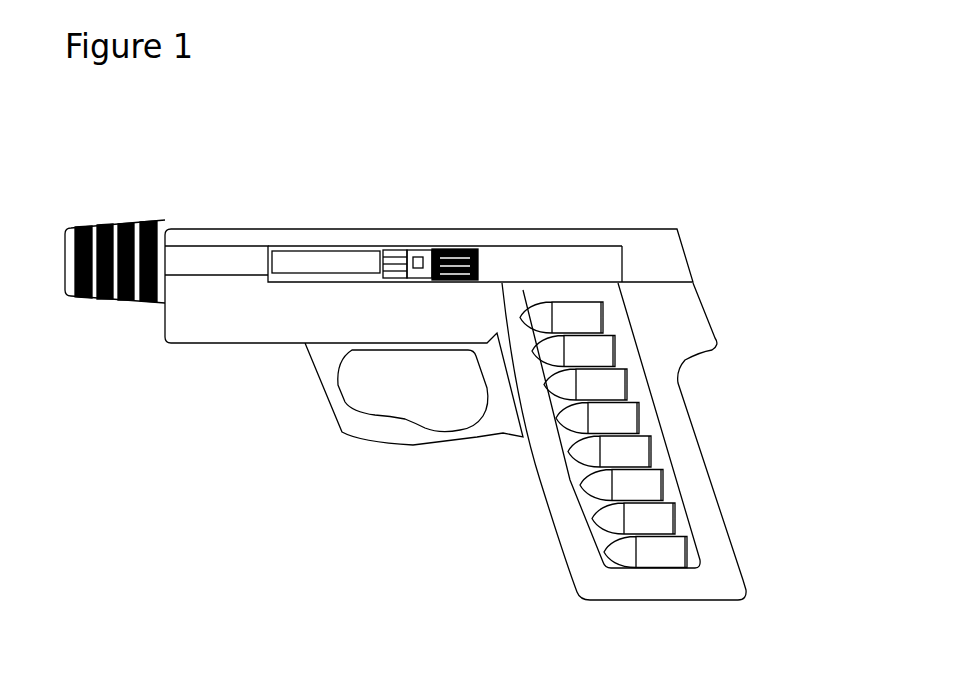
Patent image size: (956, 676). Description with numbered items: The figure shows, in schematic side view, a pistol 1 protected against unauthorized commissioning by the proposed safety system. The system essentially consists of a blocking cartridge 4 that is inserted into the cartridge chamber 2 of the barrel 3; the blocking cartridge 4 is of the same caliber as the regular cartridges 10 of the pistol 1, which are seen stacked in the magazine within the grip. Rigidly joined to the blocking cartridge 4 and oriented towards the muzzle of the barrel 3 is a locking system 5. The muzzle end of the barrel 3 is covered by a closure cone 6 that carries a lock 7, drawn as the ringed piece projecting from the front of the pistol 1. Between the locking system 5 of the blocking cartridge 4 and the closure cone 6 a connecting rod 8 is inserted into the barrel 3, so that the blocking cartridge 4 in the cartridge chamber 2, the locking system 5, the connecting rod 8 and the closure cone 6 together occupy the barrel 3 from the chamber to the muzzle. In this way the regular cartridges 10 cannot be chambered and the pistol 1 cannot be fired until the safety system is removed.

The pistol 1 is at (663, 313).
The cartridge chamber 2 is at (428, 258).
The barrel 3 is at (288, 237).
The blocking cartridge 4 is at (468, 243).
The locking system 5 is at (405, 255).
The closure cone 6 is at (117, 243).
The lock 7 is at (121, 202).
The connecting rod 8 is at (335, 263).
The regular cartridges 10 is at (623, 450).